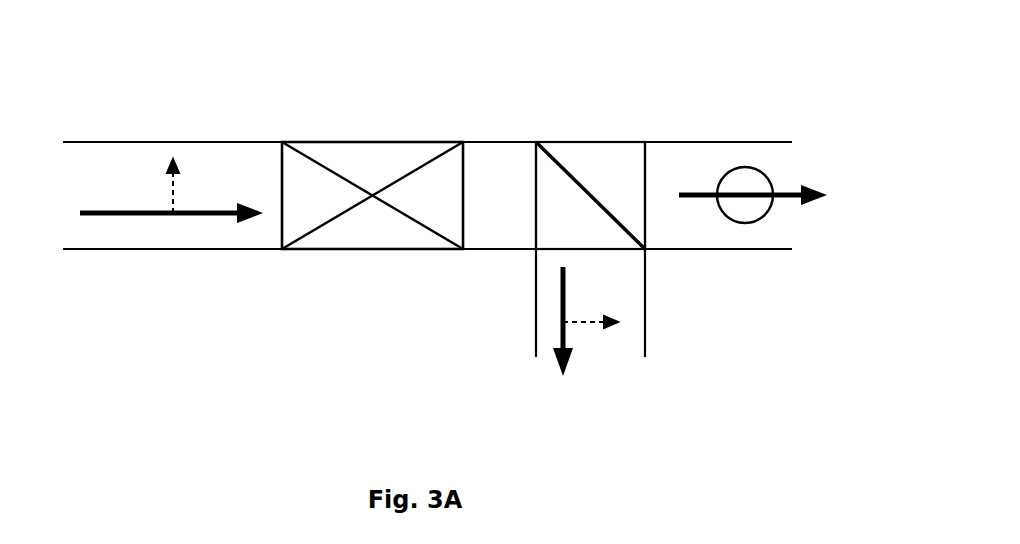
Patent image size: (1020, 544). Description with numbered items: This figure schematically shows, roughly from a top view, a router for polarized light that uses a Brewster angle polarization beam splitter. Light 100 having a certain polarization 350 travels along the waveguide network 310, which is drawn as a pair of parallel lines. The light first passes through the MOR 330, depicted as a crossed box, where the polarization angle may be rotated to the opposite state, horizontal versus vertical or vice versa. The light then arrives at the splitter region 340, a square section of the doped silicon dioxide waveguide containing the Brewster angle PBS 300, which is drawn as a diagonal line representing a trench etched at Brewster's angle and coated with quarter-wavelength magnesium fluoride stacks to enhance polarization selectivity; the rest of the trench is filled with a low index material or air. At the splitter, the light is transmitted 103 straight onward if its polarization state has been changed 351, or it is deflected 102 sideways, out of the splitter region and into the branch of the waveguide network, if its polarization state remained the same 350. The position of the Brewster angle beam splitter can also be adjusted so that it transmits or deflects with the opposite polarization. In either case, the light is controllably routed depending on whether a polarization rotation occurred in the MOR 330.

The light 100 is at (208, 240).
The deflected light 102 is at (534, 338).
The transmitted light 103 is at (808, 213).
The Brewster angle PBS 300 is at (590, 178).
The waveguide network 310 is at (698, 125).
The MOR 330 is at (337, 267).
The splitter region 340 is at (555, 125).
The polarization 350 is at (416, 249).
The changed polarization state 351 is at (753, 162).